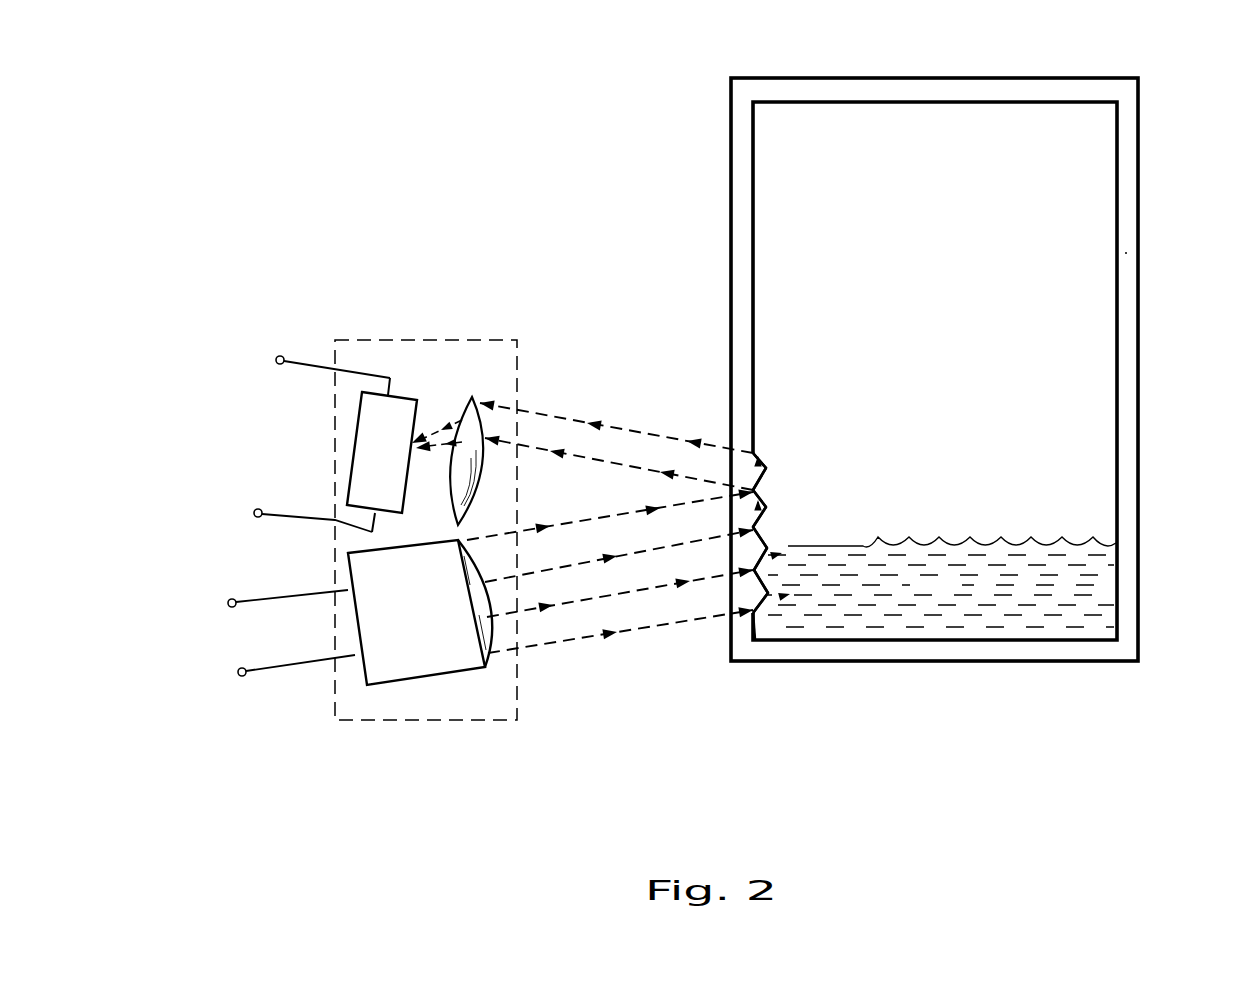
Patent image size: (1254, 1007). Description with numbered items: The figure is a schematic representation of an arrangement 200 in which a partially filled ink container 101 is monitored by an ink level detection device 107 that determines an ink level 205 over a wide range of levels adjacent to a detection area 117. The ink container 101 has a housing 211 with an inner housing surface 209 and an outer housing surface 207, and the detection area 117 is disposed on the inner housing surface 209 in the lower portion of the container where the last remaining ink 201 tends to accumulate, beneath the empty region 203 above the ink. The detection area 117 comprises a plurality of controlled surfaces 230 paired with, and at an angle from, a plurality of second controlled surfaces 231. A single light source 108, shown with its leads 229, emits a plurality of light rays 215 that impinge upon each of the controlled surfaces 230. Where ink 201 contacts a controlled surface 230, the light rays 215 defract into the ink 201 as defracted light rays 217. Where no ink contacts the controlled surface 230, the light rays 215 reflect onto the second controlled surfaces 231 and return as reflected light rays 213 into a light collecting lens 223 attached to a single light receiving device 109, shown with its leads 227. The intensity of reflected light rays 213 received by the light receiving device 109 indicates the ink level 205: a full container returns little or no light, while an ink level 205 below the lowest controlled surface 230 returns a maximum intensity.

The optical liquid level sensing system 200 is at (579, 158).
The ink container 101 is at (688, 280).
The ink level detection device 107 is at (373, 309).
The single light source 108 is at (433, 622).
The single light receiving device 109 is at (367, 458).
The light collecting lens 223 is at (473, 400).
The detector electrical leads 227 is at (277, 357).
The light source electrical leads 229 is at (240, 668).
The reflected light rays 213 is at (642, 470).
The light rays 215 is at (672, 585).
The headspace above liquid 203 is at (956, 278).
The ink 201 is at (957, 598).
The ink level 205 is at (985, 547).
The outer housing surface 207 is at (1132, 110).
The inner housing surface 209 is at (1117, 173).
The housing 211 is at (1125, 253).
The detection area 117 is at (783, 461).
The second controlled surfaces 231 is at (757, 462).
The controlled surfaces 230 is at (763, 478).
The defracted light rays 217 is at (768, 600).